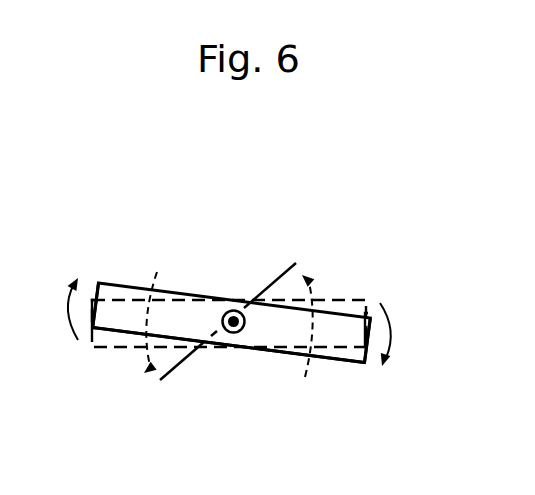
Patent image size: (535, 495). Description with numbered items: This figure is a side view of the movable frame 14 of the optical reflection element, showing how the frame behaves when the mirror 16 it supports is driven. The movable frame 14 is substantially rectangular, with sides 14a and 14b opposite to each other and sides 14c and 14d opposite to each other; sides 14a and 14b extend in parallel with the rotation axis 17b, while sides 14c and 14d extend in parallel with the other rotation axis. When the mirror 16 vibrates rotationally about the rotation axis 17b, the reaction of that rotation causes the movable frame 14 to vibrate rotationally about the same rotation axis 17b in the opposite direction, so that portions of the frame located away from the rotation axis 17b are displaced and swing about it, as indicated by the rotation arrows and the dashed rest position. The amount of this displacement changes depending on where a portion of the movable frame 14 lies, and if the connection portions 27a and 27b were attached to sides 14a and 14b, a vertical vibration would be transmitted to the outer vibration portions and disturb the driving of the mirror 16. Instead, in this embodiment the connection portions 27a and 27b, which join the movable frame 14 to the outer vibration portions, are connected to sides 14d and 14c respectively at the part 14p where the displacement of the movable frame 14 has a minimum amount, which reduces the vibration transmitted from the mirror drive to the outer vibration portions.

The movable frame 14 is at (353, 362).
The side of movable frame 14a is at (105, 322).
The side of movable frame 14b is at (353, 330).
The side of movable frame 14c is at (275, 335).
The side of movable frame 14d is at (229, 378).
The part of movable frame 14p is at (231, 334).
The mirror 16 is at (175, 373).
The rotation axis 17b is at (231, 314).
The connection portion 27b is at (238, 308).
The connection portion 27a is at (283, 262).